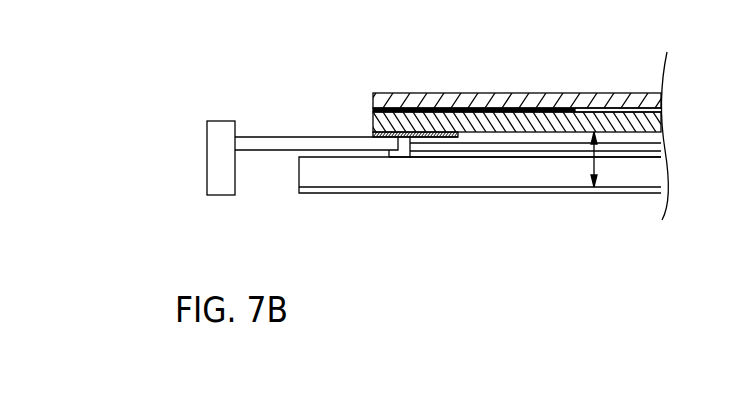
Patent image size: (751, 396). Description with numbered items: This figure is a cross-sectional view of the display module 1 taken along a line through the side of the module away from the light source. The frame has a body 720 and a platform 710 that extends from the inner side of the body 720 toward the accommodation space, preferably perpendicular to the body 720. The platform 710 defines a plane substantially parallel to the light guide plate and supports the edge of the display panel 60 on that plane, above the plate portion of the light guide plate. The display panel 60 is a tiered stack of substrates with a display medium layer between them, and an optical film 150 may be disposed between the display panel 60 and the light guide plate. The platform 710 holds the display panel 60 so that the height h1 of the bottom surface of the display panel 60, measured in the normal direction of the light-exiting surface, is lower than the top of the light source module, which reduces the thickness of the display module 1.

The display module 1 is at (225, 14).
The display panel 60 is at (433, 87).
The optical film 150 is at (670, 134).
The platform 710 is at (273, 147).
The body 720 is at (218, 168).
The height h1 is at (594, 160).